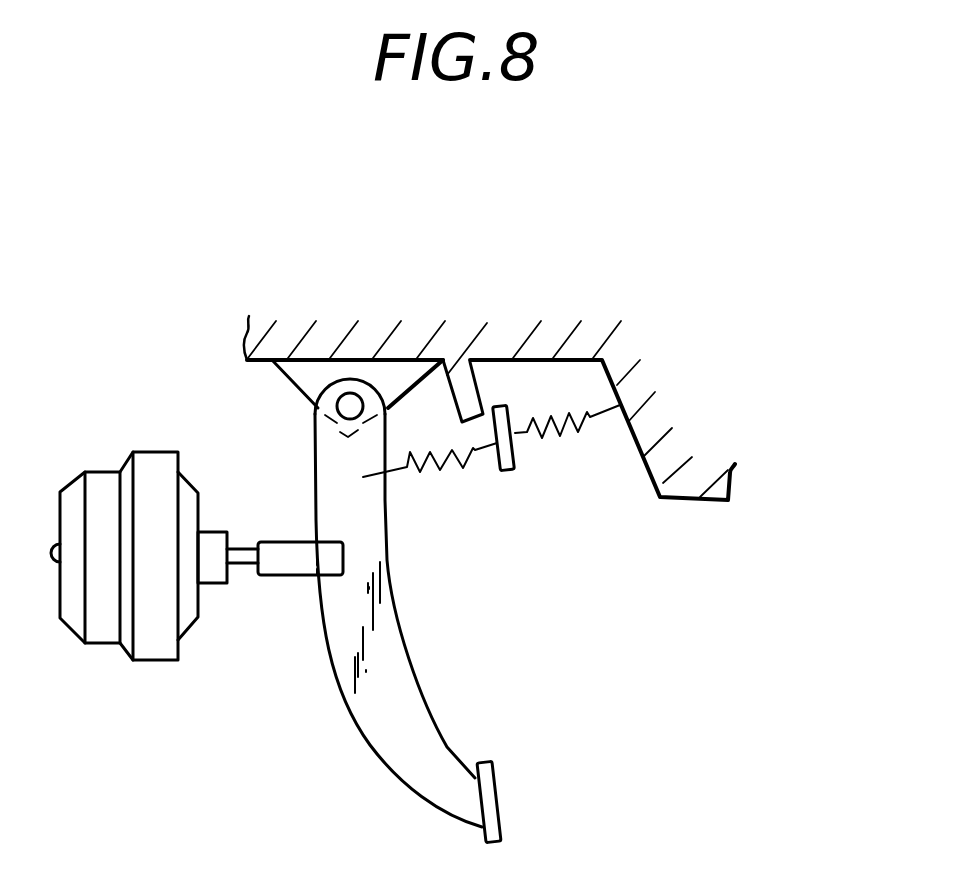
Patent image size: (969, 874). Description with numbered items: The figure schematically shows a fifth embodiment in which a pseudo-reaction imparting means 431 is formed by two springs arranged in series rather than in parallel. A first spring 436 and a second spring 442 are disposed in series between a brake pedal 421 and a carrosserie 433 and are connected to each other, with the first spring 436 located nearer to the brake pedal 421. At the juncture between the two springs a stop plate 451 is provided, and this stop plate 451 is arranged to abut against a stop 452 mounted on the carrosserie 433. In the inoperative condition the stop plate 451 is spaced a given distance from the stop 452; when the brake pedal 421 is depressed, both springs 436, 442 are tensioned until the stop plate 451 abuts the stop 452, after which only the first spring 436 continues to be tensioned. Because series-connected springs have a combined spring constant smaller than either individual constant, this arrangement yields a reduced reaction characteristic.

The brake pedal 421 is at (405, 705).
The pseudo-reaction imparting means 431 is at (525, 440).
The carrosserie 433 is at (667, 447).
The first spring 436 is at (428, 468).
The second spring 442 is at (560, 435).
The stop plate 451 is at (508, 472).
The stop 452 is at (484, 405).